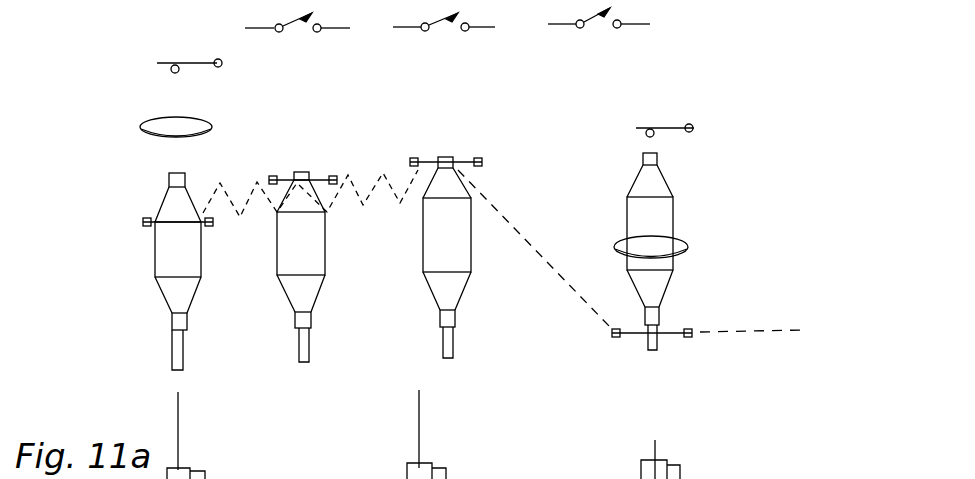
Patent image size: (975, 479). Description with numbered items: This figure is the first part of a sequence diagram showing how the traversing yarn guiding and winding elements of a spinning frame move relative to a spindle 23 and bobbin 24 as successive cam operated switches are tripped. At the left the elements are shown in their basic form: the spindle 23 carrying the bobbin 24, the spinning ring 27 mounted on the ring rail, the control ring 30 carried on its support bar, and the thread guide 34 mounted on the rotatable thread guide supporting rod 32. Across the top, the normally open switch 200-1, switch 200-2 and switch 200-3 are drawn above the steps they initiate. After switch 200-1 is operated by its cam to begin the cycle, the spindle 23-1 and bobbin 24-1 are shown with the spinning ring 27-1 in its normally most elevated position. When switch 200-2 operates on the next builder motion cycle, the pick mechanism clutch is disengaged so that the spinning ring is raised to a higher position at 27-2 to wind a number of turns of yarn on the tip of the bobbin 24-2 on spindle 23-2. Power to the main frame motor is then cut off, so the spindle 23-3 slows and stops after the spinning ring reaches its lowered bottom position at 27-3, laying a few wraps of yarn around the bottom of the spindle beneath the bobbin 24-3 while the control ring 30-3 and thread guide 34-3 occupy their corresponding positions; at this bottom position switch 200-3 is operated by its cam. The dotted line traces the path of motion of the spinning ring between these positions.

The spindle 23 is at (172, 352).
The bobbin 24 is at (157, 267).
The spinning ring 27 is at (152, 219).
The control ring 30 is at (141, 132).
The thread guide supporting rod 32 is at (222, 64).
The thread guide 34 is at (170, 66).
The normally open switch 200-1 is at (300, 31).
The cam operated switch 200-2 is at (447, 31).
The cam operated switch 200-3 is at (602, 27).
The spindle 23-1 is at (299, 349).
The bobbin 24-1 is at (278, 265).
The spinning ring 27-1 is at (280, 173).
The spindle 23-2 is at (444, 347).
The bobbin 24-2 is at (424, 262).
The spinning ring 27-2 is at (422, 157).
The spindle 23-3 is at (650, 347).
The bobbin 24-3 is at (662, 201).
The spinning ring 27-3 is at (672, 330).
The control ring 30-3 is at (688, 247).
The thread guide 34-3 is at (673, 128).